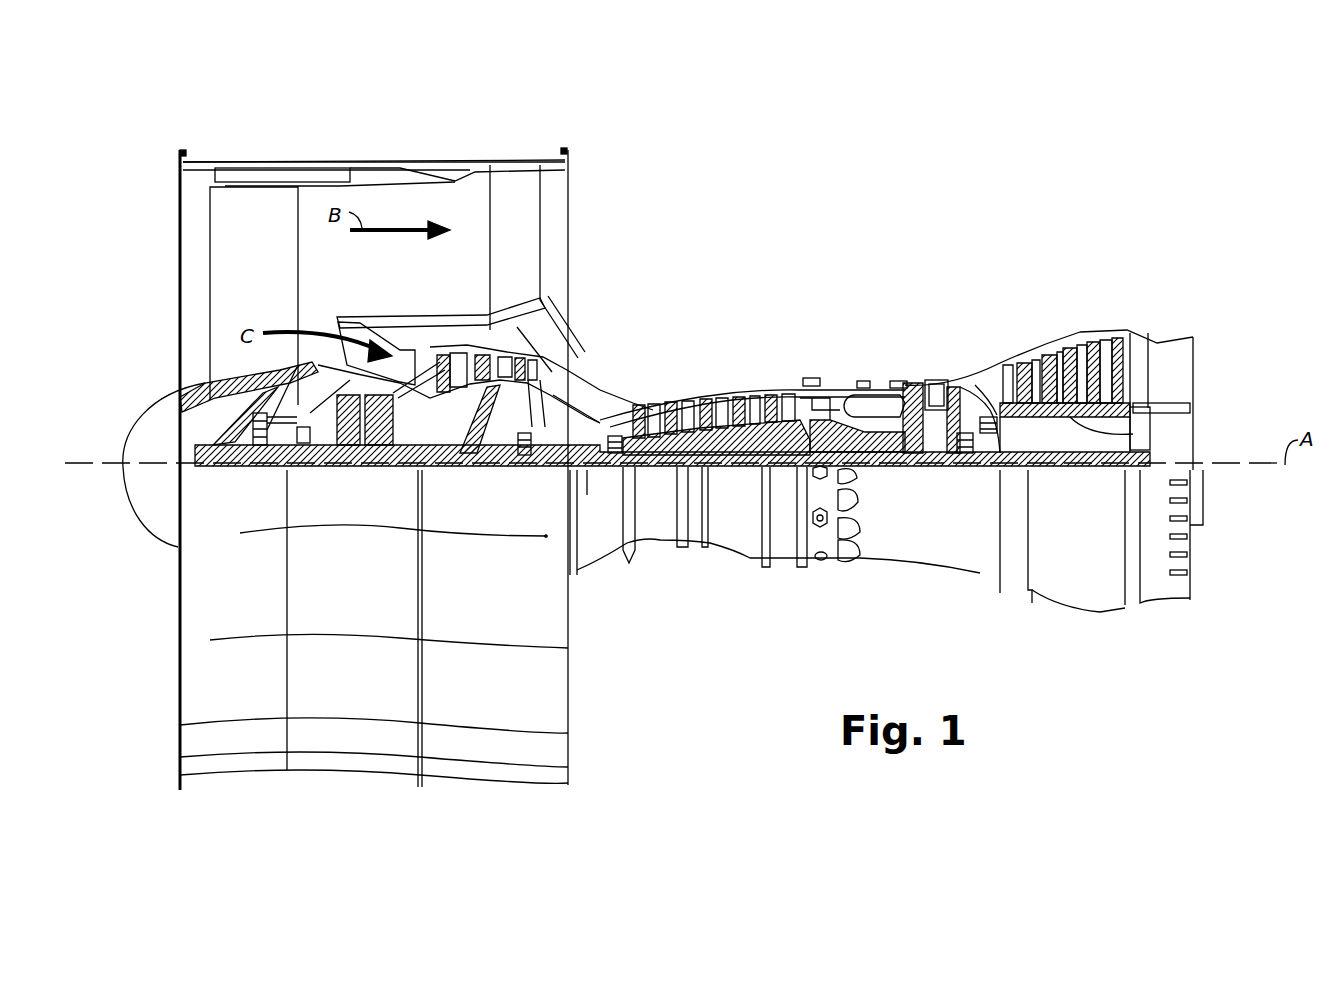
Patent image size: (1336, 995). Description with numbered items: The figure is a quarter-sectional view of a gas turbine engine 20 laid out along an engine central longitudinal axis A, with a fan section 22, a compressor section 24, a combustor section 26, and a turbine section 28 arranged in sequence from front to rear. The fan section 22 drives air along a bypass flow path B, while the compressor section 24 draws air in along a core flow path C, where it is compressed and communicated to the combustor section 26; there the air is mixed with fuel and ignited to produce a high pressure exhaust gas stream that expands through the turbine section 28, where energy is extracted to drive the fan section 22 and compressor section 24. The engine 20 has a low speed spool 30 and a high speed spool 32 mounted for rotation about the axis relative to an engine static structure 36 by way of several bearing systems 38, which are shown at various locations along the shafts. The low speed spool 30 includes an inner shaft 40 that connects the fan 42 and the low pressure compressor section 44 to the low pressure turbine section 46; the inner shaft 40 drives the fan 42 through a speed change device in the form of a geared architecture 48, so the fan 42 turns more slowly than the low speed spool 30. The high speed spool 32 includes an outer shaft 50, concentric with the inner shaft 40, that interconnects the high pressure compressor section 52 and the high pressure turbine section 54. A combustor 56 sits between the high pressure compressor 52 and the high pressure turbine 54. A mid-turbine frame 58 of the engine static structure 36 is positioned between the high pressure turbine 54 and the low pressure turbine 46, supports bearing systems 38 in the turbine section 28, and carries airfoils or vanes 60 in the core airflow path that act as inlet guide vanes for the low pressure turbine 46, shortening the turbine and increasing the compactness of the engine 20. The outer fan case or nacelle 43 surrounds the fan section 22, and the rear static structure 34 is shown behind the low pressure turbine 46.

The gas turbine engine 20 is at (1038, 170).
The fan section 22 is at (395, 133).
The compressor section 24 is at (797, 268).
The combustor section 26 is at (905, 268).
The turbine section 28 is at (1148, 268).
The low speed spool 30 is at (735, 487).
The high speed spool 32 is at (765, 440).
The engine static structure 34 is at (1133, 434).
The engine static structure 36 is at (783, 583).
The bearing systems 38 is at (258, 470).
The inner shaft 40 is at (586, 475).
The fan 42 is at (268, 263).
The nacelle 43 is at (455, 163).
The low pressure compressor section 44 is at (498, 362).
The low pressure turbine section 46 is at (1072, 357).
The geared architecture 48 is at (382, 445).
The outer shaft 50 is at (855, 462).
The high pressure compressor section 52 is at (690, 433).
The high pressure turbine section 54 is at (930, 393).
The combustor 56 is at (857, 405).
The mid-turbine frame 58 is at (977, 358).
The airfoils/vanes 60 is at (580, 134).